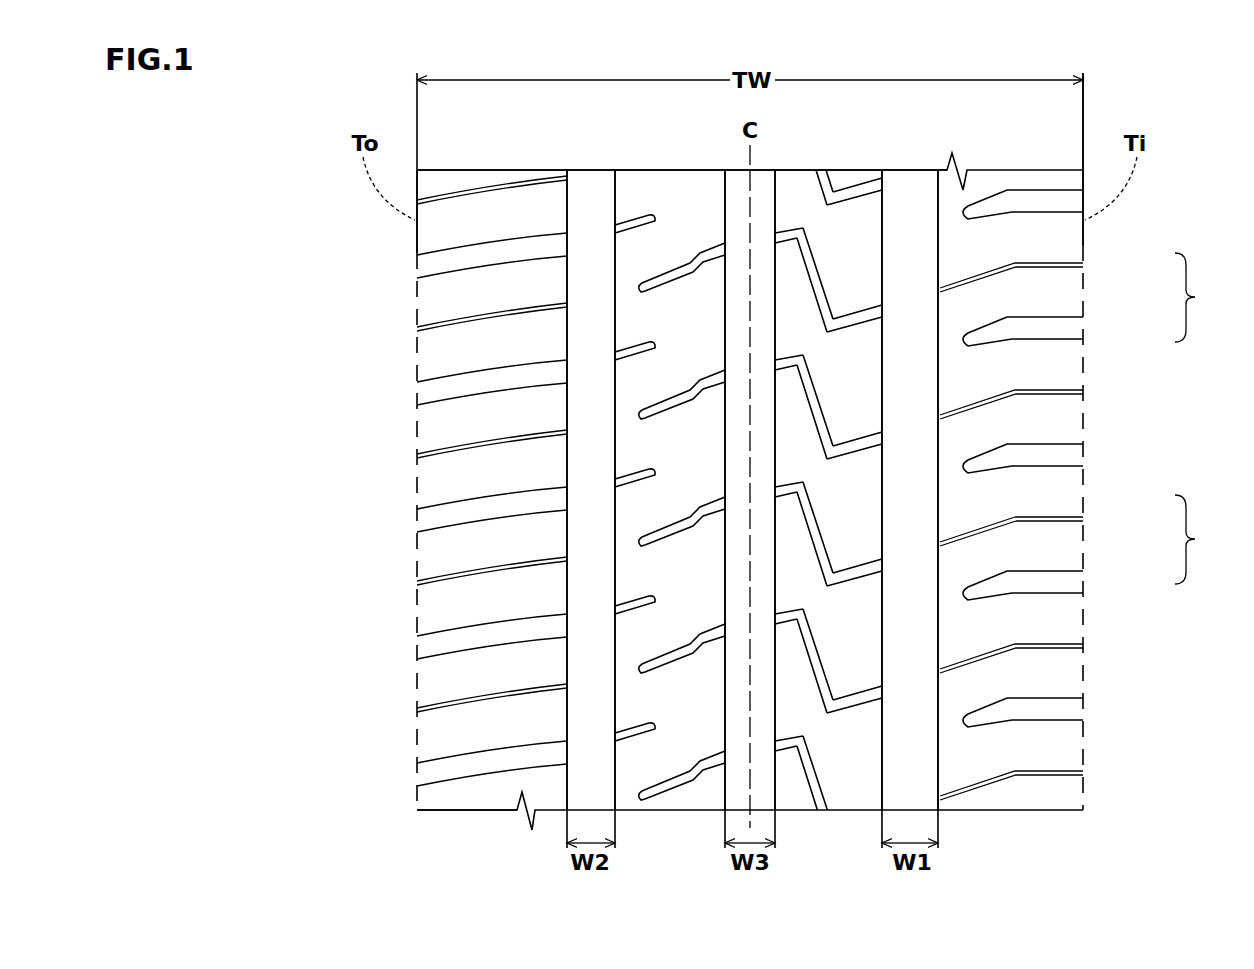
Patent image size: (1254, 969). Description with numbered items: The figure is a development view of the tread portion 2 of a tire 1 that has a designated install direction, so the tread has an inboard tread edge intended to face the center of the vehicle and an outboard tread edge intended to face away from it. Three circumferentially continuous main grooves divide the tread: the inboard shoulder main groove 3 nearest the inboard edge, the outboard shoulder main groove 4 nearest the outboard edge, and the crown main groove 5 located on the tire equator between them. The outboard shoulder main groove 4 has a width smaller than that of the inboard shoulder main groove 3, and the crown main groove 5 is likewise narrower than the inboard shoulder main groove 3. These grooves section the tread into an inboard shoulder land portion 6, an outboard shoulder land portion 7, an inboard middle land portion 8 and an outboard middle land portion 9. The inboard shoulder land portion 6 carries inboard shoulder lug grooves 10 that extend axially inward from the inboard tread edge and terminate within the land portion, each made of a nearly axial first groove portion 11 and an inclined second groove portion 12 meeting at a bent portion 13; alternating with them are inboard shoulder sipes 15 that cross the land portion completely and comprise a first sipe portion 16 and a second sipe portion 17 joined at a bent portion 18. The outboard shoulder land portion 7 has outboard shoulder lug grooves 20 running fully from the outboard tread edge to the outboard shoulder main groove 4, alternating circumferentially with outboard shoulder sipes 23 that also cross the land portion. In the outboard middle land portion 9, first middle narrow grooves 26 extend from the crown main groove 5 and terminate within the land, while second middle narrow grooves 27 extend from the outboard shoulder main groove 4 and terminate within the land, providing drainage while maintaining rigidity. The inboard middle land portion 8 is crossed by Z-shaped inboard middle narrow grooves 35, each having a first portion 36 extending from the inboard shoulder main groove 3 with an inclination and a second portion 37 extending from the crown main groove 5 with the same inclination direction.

The tire 1 is at (835, 165).
The tread portion 2 is at (690, 165).
The inboard shoulder main groove 3 is at (910, 215).
The outboard shoulder main groove 4 is at (590, 215).
The crown main groove 5 is at (740, 210).
The inboard shoulder land portion 6 is at (1010, 245).
The outboard shoulder land portion 7 is at (490, 215).
The inboard middle land portion 8 is at (800, 210).
The outboard middle land portion 9 is at (665, 210).
The inboard shoulder lug groove 10 is at (1098, 458).
The first groove portion 11 is at (1050, 326).
The second groove portion 12 is at (983, 333).
The bent portion 13 is at (1010, 455).
The inboard shoulder sipe 15 is at (1087, 468).
The first sipe portion 16 is at (1045, 520).
The second sipe portion 17 is at (985, 538).
The bent portion 18 is at (1018, 776).
The outboard shoulder lug groove 20 is at (480, 387).
The outboard shoulder sipe 23 is at (497, 448).
The first middle narrow groove 26 is at (668, 273).
The second middle narrow groove 27 is at (635, 347).
The inboard middle narrow groove 35 is at (820, 412).
The first portion 36 is at (860, 705).
The second portion 37 is at (790, 620).